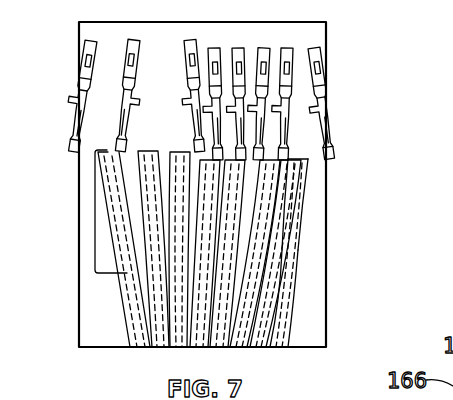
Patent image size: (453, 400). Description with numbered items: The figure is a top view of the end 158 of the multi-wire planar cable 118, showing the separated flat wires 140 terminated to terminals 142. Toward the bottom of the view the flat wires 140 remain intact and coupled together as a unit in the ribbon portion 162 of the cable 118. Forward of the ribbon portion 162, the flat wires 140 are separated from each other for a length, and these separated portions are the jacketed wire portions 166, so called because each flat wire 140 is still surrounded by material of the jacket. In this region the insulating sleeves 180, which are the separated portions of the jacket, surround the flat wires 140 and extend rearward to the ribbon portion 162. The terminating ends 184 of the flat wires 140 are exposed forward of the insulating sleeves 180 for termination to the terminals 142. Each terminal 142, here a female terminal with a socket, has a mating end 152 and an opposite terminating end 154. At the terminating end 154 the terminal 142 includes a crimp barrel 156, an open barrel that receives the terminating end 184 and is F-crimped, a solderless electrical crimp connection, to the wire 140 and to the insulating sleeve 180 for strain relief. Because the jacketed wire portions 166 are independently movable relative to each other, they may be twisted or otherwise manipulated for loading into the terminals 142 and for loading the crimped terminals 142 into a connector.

The multi-wire planar cable 118 is at (112, 313).
The flat wire 140 is at (127, 298).
The terminal 142 is at (93, 92).
The mating end 152 is at (359, 98).
The terminating end 154 is at (311, 122).
The crimp barrel 156 is at (305, 160).
The end of the cable 158 is at (352, 243).
The ribbon portion 162 is at (306, 310).
The jacketed wire portion 166 is at (95, 215).
The insulating sleeve 180 is at (297, 233).
The terminating end of the wire 184 is at (310, 163).